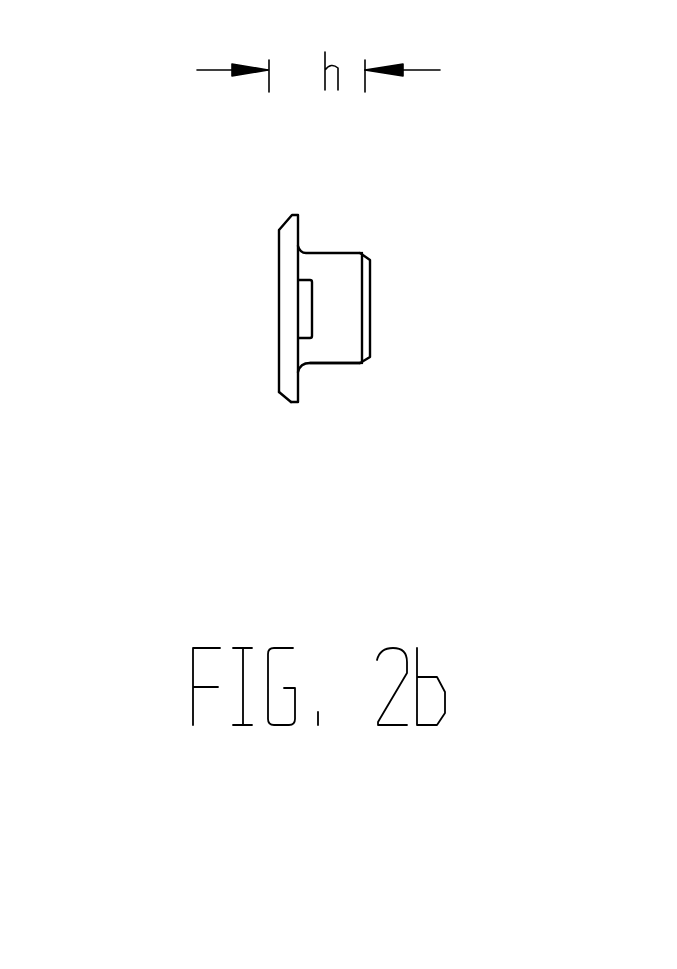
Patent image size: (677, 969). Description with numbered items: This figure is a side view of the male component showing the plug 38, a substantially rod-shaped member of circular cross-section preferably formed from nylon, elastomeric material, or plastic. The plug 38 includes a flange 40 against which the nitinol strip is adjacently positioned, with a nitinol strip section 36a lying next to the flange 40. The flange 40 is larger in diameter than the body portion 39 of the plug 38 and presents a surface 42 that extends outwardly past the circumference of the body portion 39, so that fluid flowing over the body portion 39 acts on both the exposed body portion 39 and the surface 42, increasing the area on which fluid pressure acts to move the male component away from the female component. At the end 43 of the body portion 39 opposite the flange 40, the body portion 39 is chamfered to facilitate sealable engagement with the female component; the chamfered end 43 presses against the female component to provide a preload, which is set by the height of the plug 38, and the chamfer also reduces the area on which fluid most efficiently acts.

The surface 42 is at (300, 227).
The flange 40 is at (287, 396).
The body portion 39 is at (348, 275).
The chamfered end 43 is at (370, 340).
The nitinol strip section 36a is at (312, 330).
The plug 38 is at (318, 363).